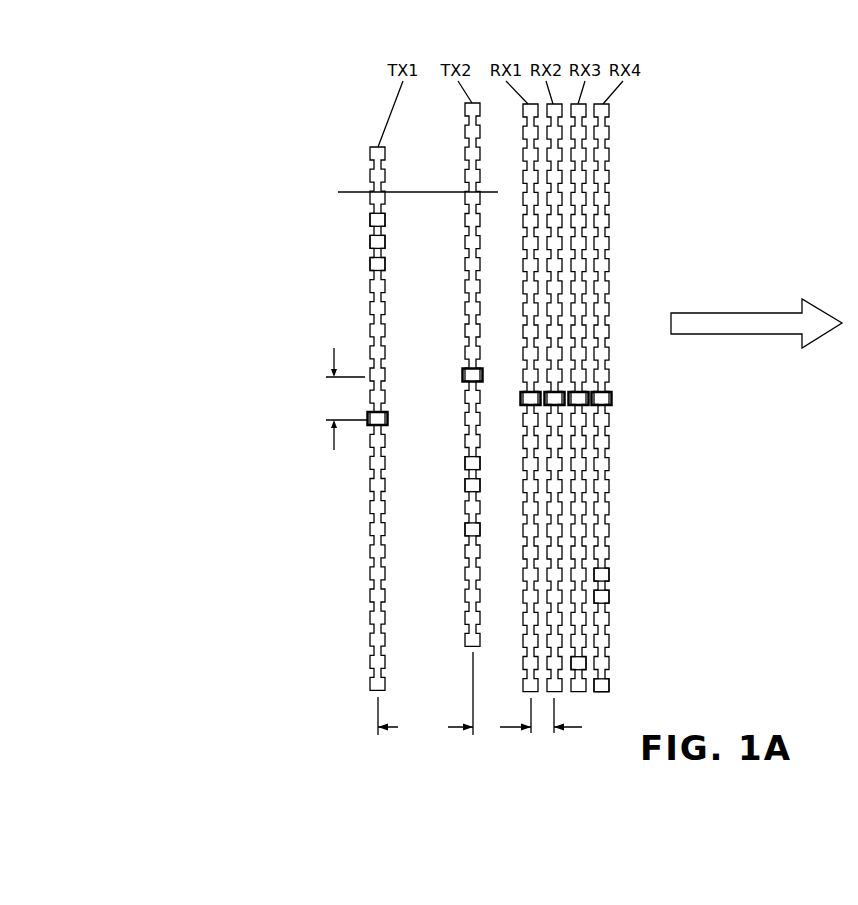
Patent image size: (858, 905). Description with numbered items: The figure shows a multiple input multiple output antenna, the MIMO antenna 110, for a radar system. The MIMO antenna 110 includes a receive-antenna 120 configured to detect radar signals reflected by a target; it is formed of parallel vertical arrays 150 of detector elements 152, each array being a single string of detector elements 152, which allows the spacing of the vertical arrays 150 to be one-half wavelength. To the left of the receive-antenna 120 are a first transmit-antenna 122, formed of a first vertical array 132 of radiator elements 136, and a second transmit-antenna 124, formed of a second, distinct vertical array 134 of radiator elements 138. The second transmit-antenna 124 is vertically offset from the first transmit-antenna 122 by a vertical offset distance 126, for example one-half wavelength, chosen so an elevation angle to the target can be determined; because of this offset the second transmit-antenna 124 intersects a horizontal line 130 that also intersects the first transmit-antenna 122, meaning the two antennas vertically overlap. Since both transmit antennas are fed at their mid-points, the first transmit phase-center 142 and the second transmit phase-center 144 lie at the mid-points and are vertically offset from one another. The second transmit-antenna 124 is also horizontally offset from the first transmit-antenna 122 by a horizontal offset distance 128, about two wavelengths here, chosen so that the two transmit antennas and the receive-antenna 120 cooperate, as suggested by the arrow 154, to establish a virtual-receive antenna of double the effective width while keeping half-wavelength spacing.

The MIMO antenna 110 is at (318, 106).
The receive-antenna 120 is at (620, 742).
The first transmit-antenna 122 is at (370, 620).
The second transmit-antenna 124 is at (465, 598).
The vertical offset distance 126 is at (326, 380).
The horizontal offset distance 128 is at (398, 728).
The horizontal line 130 is at (345, 192).
The first vertical array 132 is at (370, 222).
The second vertical array 134 is at (465, 532).
The radiator elements 136 is at (370, 266).
The radiator elements 138 is at (465, 487).
The first transmit phase-center 142 is at (368, 426).
The second transmit phase-center 144 is at (462, 377).
The vertical arrays 150 is at (605, 685).
The detector elements 152 is at (608, 597).
The arrow 154 is at (746, 312).